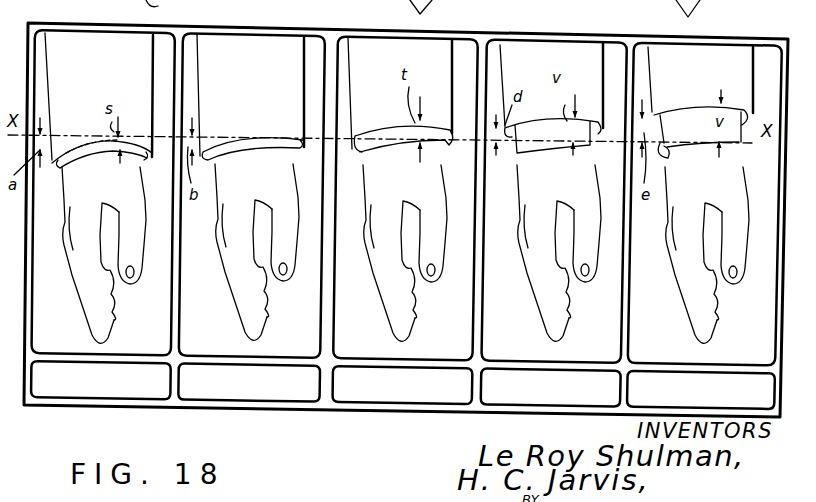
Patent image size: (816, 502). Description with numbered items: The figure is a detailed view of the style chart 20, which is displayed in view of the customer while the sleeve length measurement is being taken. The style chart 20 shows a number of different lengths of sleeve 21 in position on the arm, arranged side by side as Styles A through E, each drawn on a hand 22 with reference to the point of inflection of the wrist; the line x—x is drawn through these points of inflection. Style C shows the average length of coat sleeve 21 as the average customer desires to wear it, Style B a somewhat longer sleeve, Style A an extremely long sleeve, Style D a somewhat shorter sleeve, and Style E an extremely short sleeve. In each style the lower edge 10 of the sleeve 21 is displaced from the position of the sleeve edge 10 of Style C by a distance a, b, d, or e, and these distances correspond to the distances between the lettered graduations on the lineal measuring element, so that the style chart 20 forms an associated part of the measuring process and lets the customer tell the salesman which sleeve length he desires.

The lower edge of sleeve 10 is at (684, 90).
The style chart 20 is at (557, 38).
The sleeve 21 is at (726, 35).
The glove hand portion 22 is at (213, 167).